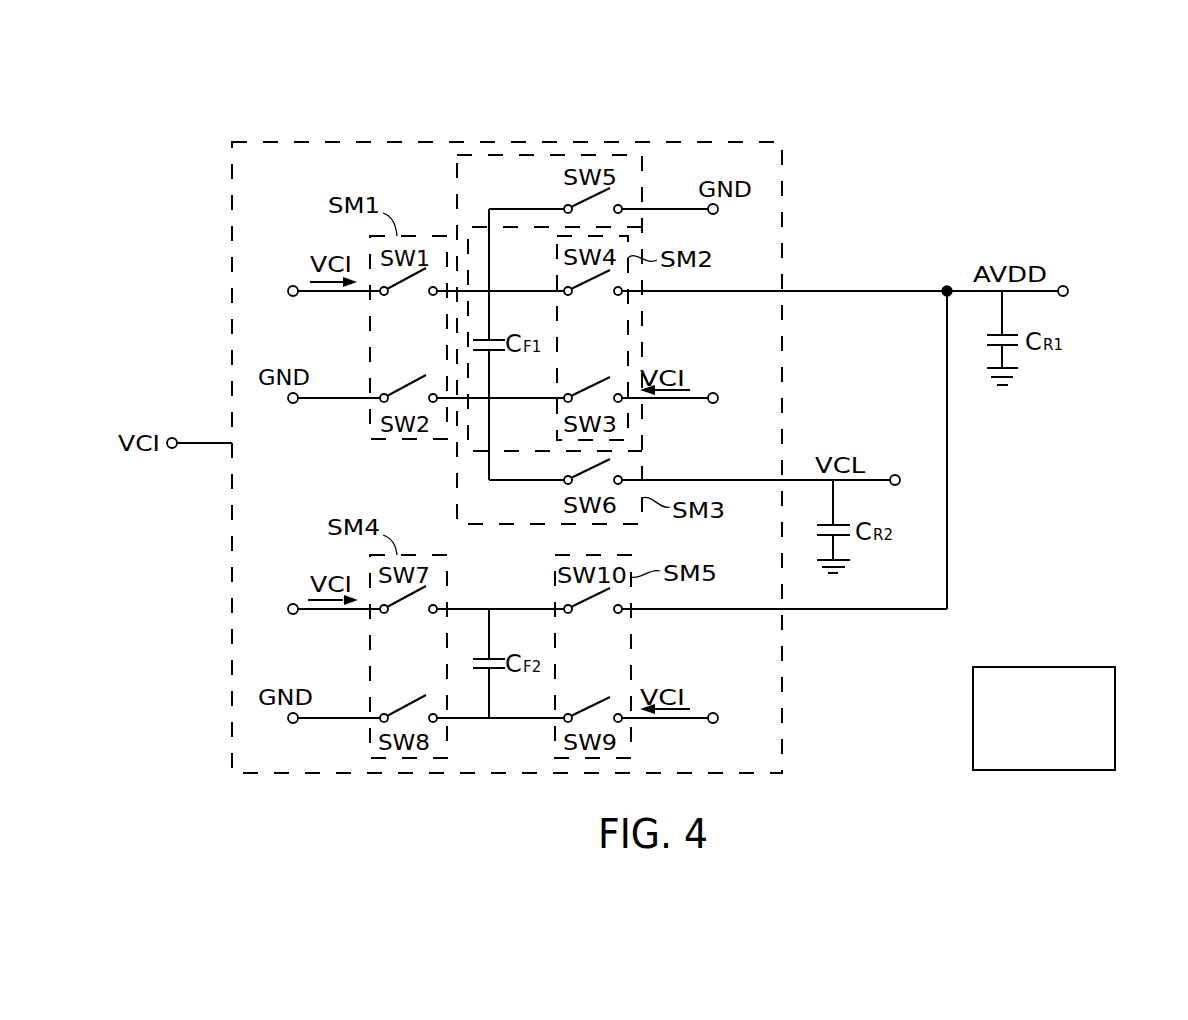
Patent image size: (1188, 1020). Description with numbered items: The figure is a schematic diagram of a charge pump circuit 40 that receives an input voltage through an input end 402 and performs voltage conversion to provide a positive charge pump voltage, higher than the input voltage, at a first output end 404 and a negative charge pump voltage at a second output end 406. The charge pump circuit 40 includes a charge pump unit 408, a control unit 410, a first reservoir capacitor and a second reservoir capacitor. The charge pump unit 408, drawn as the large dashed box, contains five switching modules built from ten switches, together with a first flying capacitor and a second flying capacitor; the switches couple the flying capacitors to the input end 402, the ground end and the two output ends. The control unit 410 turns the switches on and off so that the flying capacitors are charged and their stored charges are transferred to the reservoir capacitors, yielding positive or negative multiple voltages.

The charge pump circuit 40 is at (975, 125).
The input end 402 is at (293, 286).
The first output end 404 is at (1064, 285).
The second output end 406 is at (897, 475).
The charge pump unit 408 is at (232, 178).
The control unit 410 is at (1115, 685).